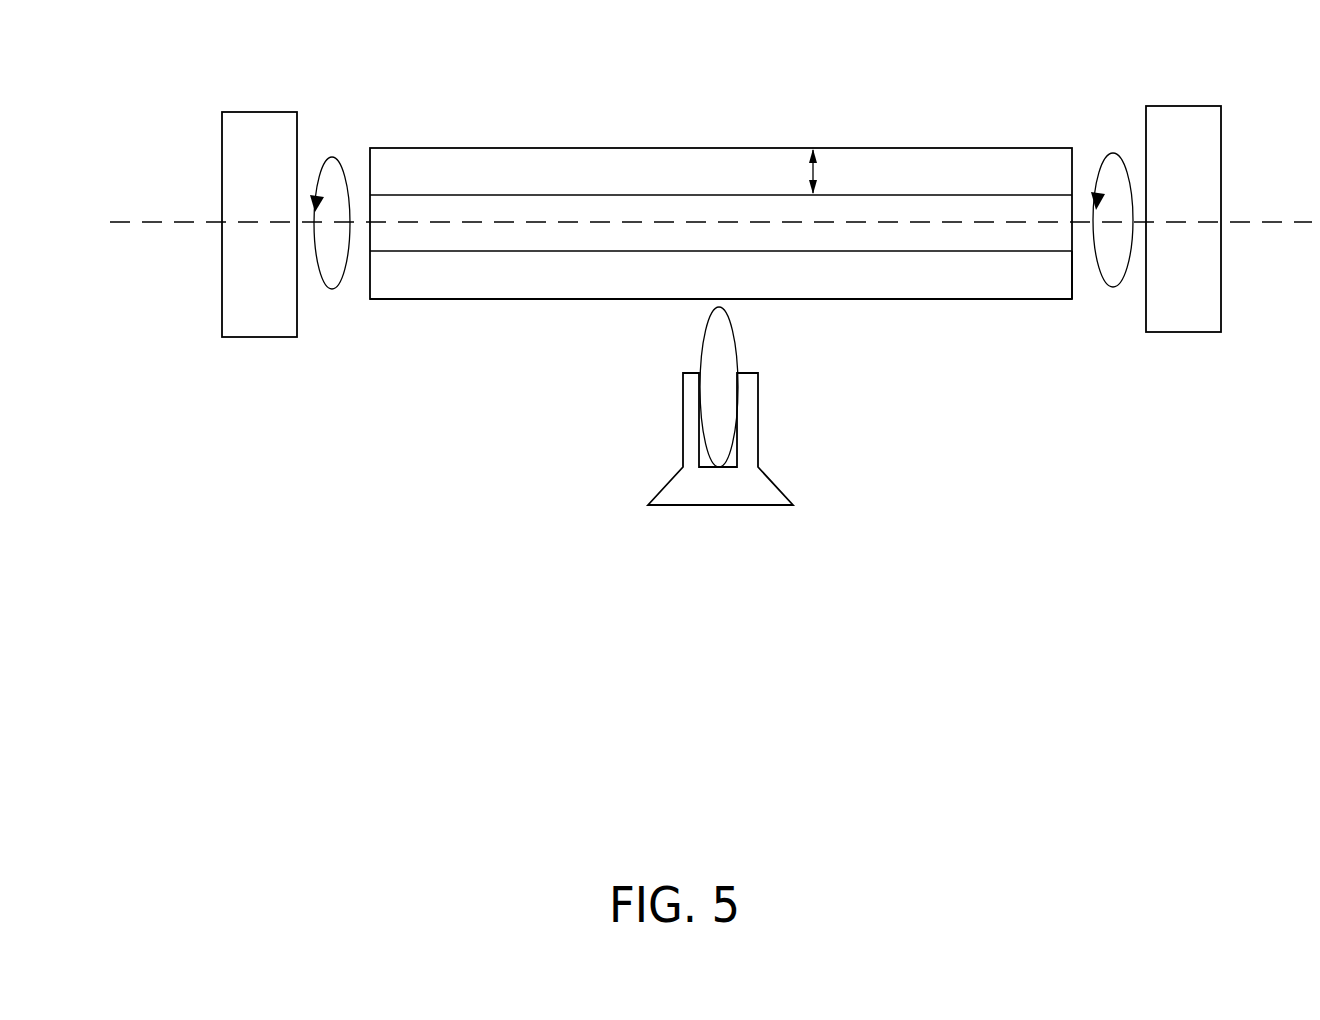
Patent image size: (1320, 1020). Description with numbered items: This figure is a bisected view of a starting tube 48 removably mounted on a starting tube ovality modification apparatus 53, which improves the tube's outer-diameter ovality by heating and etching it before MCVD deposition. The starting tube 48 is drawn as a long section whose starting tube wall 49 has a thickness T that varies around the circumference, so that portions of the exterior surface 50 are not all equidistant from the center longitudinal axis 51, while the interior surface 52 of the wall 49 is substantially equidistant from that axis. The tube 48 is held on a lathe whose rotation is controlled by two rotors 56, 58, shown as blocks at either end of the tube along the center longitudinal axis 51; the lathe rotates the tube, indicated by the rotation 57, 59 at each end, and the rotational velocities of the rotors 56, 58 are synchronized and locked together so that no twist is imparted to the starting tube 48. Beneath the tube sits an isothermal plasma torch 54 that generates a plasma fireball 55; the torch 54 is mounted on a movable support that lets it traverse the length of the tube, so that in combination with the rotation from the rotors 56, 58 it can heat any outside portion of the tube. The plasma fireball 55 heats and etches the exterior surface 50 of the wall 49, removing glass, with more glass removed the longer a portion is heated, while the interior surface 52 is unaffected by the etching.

The starting tube 48 is at (725, 110).
The starting tube wall 49 is at (978, 277).
The exterior surface 50 is at (586, 312).
The center longitudinal axis 51 is at (570, 205).
The interior surface 52 is at (500, 252).
The starting tube ovality modification apparatus 53 is at (392, 541).
The isothermal plasma torch 54 is at (736, 487).
The plasma fireball 55 is at (722, 353).
The rotor 56 is at (1203, 293).
The rotation 57 is at (1098, 130).
The rotor 58 is at (278, 300).
The rotation 59 is at (335, 130).
The thickness T is at (838, 160).